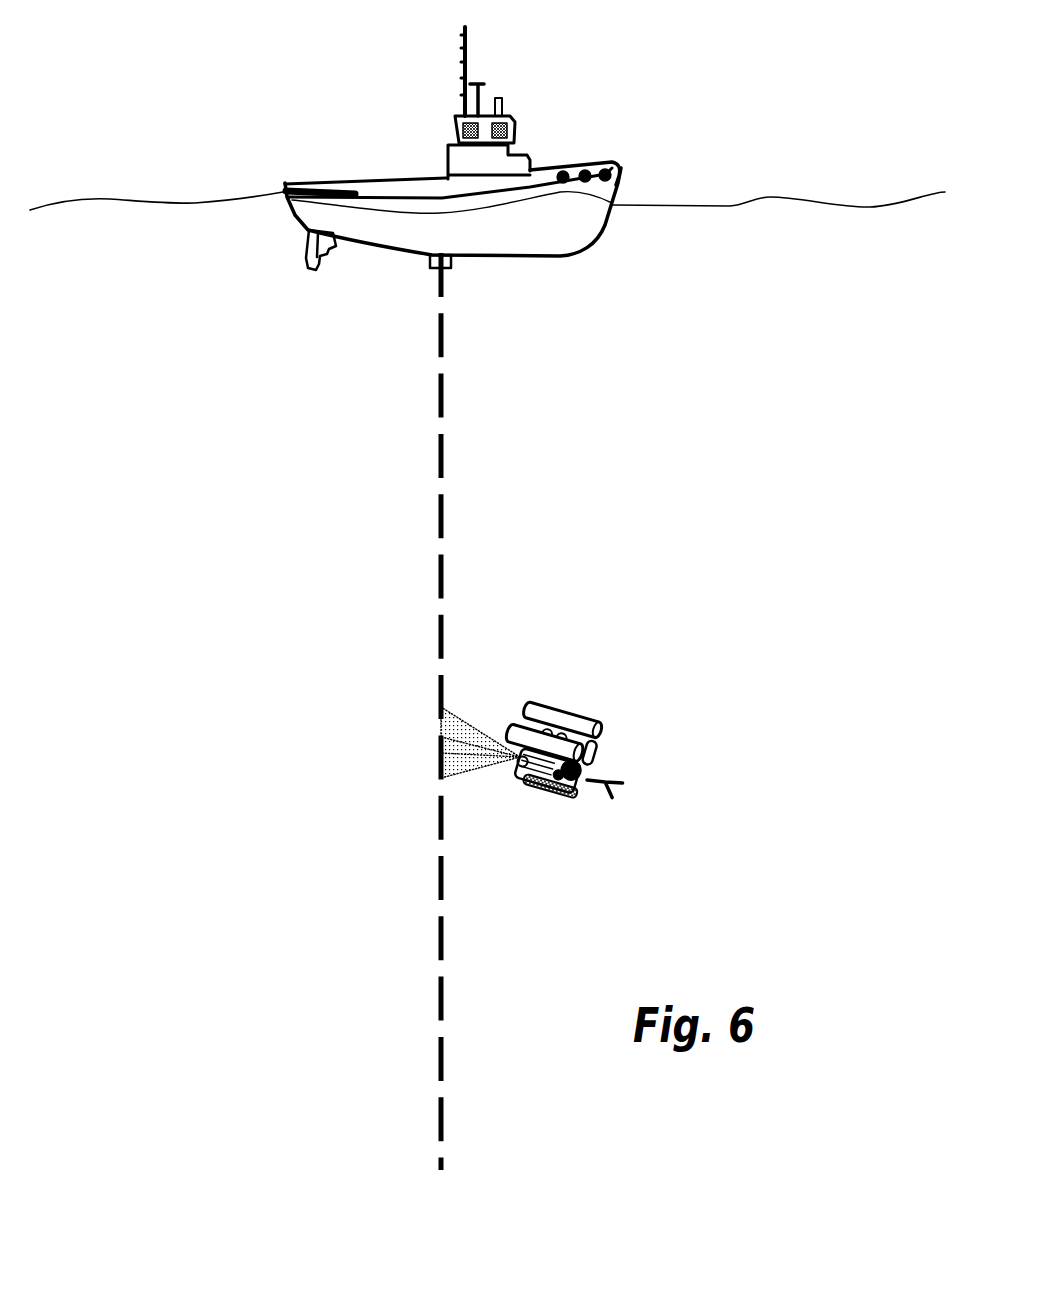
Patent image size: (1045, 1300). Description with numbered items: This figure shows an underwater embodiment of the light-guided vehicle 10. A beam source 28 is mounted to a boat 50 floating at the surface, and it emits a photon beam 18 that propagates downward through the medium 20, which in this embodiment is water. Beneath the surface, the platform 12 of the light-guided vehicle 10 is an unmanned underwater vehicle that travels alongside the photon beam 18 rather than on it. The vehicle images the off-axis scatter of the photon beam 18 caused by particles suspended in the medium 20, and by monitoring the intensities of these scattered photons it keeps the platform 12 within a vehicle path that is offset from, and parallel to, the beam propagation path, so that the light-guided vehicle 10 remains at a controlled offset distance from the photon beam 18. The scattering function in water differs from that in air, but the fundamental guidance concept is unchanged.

The light-guided vehicle 10 is at (546, 752).
The platform 12 is at (567, 795).
The photon beam 18 is at (442, 450).
The medium 20 is at (765, 427).
The beam source 28 is at (430, 268).
The boat 50 is at (547, 256).